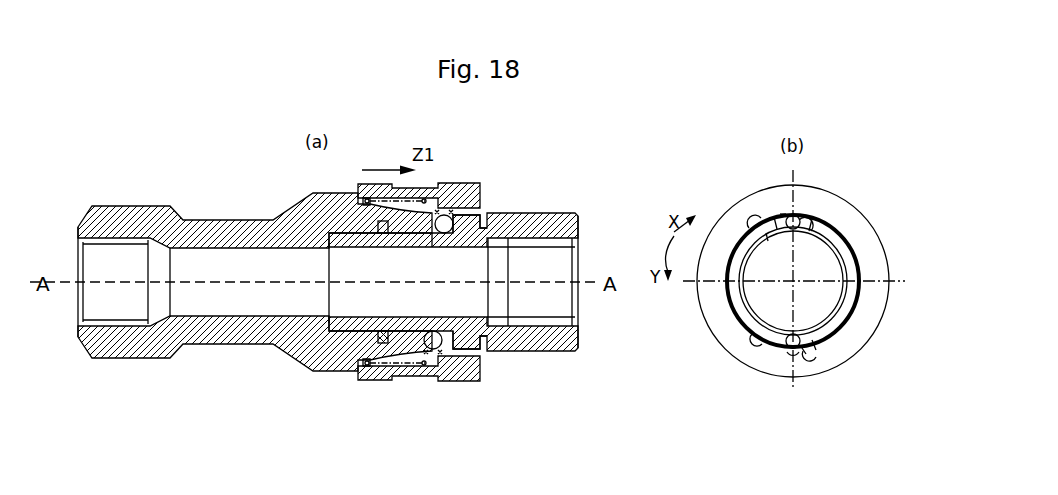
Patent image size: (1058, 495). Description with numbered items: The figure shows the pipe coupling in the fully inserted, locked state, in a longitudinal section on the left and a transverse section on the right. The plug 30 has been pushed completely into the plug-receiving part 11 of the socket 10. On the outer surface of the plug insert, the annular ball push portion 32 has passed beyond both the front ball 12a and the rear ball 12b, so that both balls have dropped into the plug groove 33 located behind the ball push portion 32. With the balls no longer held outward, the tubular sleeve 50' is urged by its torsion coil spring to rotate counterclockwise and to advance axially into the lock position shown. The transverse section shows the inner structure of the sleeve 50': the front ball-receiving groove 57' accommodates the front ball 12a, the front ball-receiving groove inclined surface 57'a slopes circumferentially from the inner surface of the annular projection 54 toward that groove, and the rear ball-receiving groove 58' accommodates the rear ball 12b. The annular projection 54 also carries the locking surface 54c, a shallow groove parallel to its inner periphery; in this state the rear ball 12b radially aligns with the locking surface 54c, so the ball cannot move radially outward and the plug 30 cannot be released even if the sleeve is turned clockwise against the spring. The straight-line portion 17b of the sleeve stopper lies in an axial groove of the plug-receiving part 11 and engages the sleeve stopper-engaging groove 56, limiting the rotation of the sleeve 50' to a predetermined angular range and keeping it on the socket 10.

The socket 10 is at (223, 221).
The plug-receiving part 11 is at (483, 216).
The front ball 12a is at (448, 213).
The rear ball 12b is at (434, 331).
The plug 30 is at (530, 214).
The ball push portion 32 is at (407, 247).
The plug groove 33 is at (436, 242).
The tubular sleeve 50' is at (603, 304).
The annular projection 54 is at (867, 303).
The locking surface 54c is at (792, 352).
The sleeve stopper-engaging groove 56 is at (750, 218).
The front ball-receiving groove 57' is at (740, 192).
The front ball-receiving groove inclined surface 57'a is at (745, 174).
The rear ball-receiving groove 58' is at (853, 378).
The straight-line portion 17b is at (766, 233).